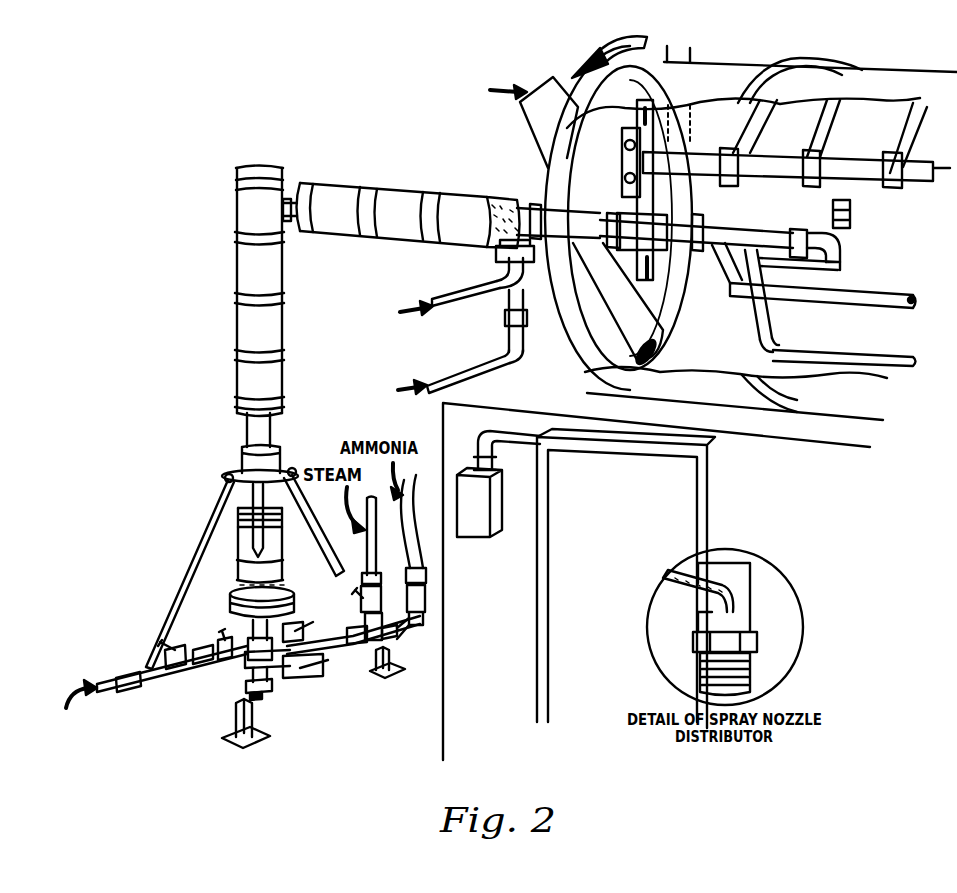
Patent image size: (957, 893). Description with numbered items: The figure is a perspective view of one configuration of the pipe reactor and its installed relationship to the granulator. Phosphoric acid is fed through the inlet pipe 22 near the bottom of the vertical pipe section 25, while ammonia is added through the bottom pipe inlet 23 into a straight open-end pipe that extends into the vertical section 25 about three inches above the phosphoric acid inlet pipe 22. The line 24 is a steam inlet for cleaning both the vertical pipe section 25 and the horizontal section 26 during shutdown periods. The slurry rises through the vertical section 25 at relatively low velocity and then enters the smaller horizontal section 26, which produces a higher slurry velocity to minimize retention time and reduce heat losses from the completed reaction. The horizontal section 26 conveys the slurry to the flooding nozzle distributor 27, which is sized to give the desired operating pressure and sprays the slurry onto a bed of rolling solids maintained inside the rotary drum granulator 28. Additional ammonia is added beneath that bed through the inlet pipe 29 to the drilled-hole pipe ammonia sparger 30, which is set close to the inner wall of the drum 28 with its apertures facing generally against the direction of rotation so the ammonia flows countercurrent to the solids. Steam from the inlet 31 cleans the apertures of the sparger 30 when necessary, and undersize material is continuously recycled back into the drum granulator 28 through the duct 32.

The inlet pipe 22 is at (66, 684).
The bottom pipe inlet 23 is at (257, 665).
The line 24 is at (378, 567).
The vertical pipe section 25 is at (241, 360).
The horizontal section 26 is at (407, 188).
The flooding nozzle distributor 27 is at (833, 206).
The rotary drum granulator 28 is at (752, 62).
The inlet pipe 29 is at (453, 372).
The ammonia sparger 30 is at (846, 352).
The inlet 31 is at (443, 297).
The duct 32 is at (550, 83).